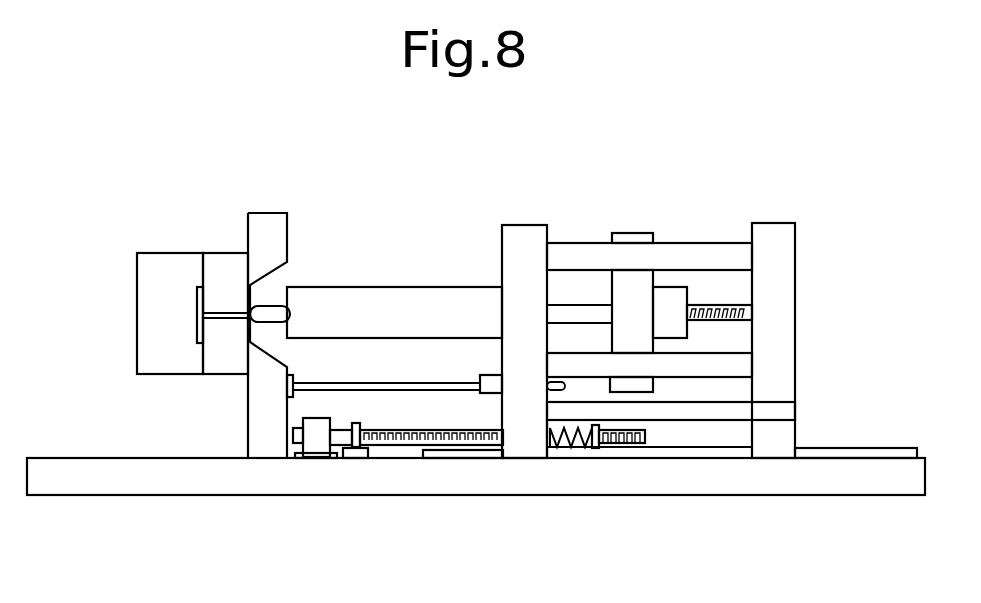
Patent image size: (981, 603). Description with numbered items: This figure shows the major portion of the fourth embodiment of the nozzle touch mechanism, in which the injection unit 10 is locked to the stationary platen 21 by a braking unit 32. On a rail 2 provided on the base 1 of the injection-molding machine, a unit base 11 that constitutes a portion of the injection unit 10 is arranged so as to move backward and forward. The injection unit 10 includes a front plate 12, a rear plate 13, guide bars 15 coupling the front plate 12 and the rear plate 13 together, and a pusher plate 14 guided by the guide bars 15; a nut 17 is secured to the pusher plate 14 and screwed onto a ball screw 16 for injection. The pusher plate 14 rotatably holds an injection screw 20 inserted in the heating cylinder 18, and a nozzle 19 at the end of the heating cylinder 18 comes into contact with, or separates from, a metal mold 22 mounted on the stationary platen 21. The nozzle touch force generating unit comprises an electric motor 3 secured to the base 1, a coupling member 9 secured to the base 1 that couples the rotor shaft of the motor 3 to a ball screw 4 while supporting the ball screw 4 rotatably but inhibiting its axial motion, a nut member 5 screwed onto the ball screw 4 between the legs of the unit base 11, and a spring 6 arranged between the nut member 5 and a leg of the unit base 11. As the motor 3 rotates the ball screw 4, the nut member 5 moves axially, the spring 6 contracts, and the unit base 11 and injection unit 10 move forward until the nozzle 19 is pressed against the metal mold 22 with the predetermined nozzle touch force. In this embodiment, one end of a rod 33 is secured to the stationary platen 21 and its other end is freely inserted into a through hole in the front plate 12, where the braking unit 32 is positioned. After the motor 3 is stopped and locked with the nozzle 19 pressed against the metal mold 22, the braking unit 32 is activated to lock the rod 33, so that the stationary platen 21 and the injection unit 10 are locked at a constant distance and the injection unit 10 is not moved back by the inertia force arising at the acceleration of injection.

The base 1 is at (120, 487).
The rail 2 is at (847, 450).
The electric motor 3 is at (317, 452).
The ball screw 4 is at (633, 445).
The nut member 5 is at (595, 447).
The spring 6 is at (560, 447).
The coupling member 9 is at (357, 450).
The injection unit 10 is at (712, 182).
The unit base 11 is at (785, 418).
The front plate 12 is at (522, 225).
The rear plate 13 is at (780, 237).
The pusher plate 14 is at (630, 233).
The guide bars 15 is at (713, 363).
The ball screw for injection 16 is at (735, 302).
The nut 17 is at (680, 327).
The heating cylinder 18 is at (388, 290).
The nozzle 19 is at (268, 308).
The injection screw 20 is at (576, 308).
The stationary platen 21 is at (267, 213).
The metal mold 22 is at (168, 260).
The braking unit 32 is at (495, 395).
The rod 33 is at (408, 388).